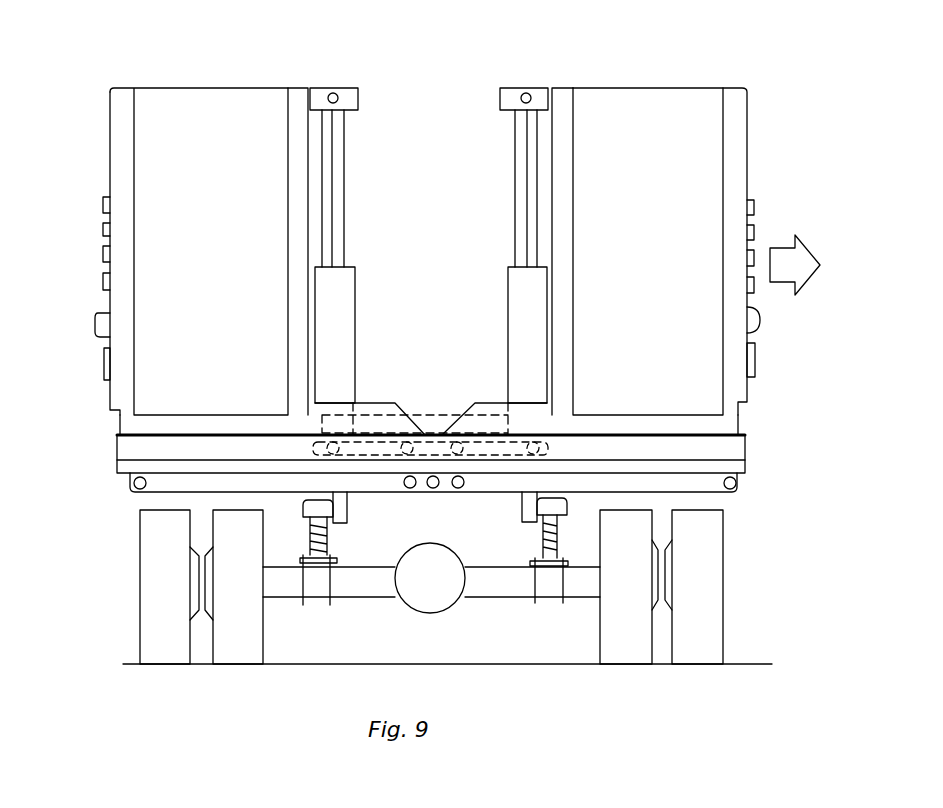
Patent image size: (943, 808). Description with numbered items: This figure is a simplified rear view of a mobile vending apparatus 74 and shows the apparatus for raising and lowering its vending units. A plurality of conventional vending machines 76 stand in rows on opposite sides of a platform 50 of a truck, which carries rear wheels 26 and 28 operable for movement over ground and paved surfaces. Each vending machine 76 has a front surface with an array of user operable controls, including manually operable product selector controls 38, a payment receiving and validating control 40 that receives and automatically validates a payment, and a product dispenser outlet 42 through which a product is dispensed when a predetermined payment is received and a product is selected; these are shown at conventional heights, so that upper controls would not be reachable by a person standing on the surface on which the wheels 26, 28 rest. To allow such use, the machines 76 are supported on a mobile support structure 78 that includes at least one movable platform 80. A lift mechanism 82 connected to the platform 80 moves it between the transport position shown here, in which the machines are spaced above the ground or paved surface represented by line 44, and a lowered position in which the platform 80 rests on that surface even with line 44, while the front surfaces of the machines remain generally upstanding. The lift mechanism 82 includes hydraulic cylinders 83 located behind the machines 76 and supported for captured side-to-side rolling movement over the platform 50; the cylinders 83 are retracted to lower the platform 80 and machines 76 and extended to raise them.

The mobile vending apparatus 74 is at (748, 70).
The vending machines 76 is at (108, 126).
The product selector controls 38 is at (104, 252).
The payment receiving and validating control 40 is at (95, 325).
The product dispenser outlet 42 is at (104, 365).
The lift mechanism 82 is at (360, 86).
The hydraulic cylinders 83 is at (358, 288).
The movable platform 80 is at (115, 423).
The mobile support structure 78 is at (115, 432).
The truck platform 50 is at (747, 470).
The ground or paved surface line 44 is at (322, 664).
The rear wheels 26 is at (140, 622).
The rear wheels 28 is at (723, 608).